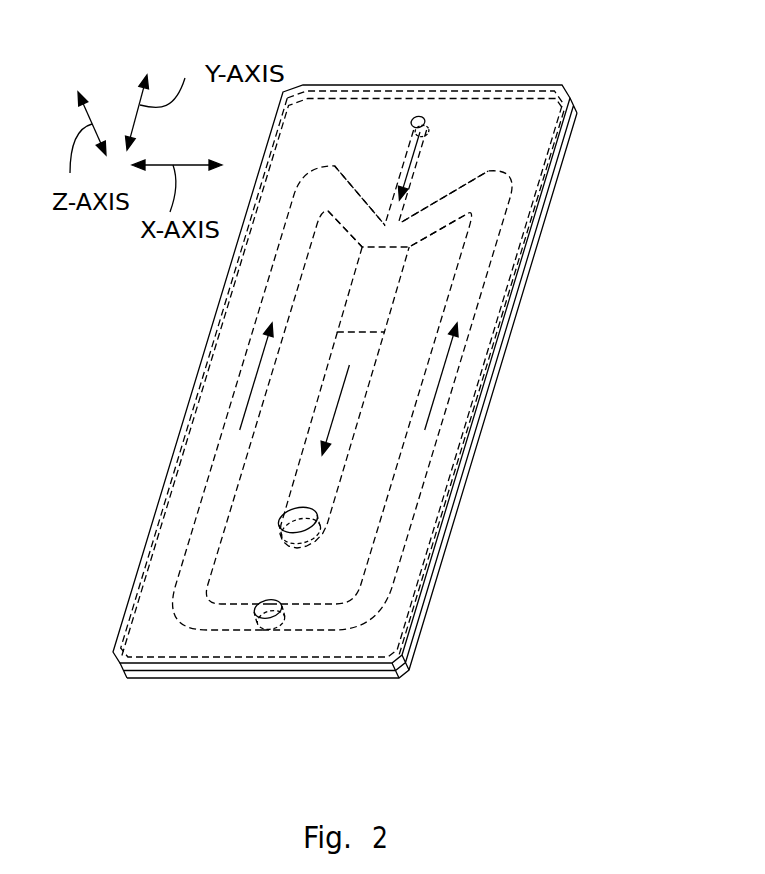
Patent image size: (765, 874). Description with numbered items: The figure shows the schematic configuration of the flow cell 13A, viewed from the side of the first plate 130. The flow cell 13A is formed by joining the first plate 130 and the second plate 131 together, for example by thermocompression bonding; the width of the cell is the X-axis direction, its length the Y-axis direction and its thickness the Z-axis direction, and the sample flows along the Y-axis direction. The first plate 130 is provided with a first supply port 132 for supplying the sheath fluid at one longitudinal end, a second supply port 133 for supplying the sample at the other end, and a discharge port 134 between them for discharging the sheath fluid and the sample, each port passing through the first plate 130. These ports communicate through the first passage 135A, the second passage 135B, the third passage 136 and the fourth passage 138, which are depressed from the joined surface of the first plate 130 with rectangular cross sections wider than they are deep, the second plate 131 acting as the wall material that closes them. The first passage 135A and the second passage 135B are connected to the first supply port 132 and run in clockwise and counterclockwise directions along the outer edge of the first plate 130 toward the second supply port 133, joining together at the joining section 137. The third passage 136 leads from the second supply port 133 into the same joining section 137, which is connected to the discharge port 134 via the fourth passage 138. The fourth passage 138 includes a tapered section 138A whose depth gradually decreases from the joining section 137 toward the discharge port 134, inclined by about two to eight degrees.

The flow cell 13A is at (589, 174).
The first plate 130 is at (397, 625).
The second plate 131 is at (345, 680).
The first supply port 132 is at (255, 616).
The second supply port 133 is at (421, 116).
The discharge port 134 is at (308, 538).
The first passage 135A is at (218, 497).
The second passage 135B is at (410, 488).
The third passage 136 is at (410, 160).
The joining section 137 is at (387, 250).
The tapered section 138A is at (377, 287).
The fourth passage 138 is at (348, 405).